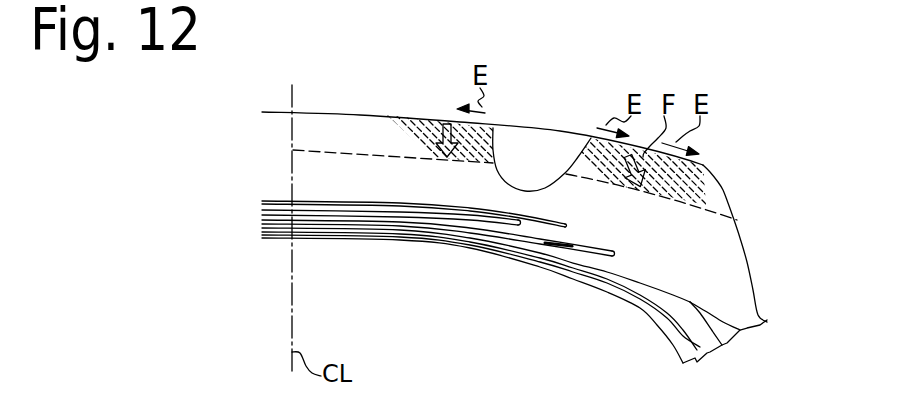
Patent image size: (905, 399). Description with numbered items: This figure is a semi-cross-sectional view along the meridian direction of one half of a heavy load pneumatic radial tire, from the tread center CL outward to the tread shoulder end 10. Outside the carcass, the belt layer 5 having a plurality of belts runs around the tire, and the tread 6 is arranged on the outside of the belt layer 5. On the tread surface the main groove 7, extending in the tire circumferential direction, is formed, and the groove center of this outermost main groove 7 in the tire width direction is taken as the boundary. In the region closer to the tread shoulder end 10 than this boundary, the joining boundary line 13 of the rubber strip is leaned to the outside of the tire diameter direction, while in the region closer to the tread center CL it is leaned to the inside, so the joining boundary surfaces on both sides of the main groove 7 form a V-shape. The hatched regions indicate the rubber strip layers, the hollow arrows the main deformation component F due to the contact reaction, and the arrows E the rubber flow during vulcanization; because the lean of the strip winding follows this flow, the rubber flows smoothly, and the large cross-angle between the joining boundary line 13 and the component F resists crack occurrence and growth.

The belt layer 5 is at (346, 200).
The tread 6 is at (355, 110).
The main groove 7 is at (552, 149).
The tread shoulder end 10 is at (712, 173).
The joining boundary line 13 is at (676, 180).